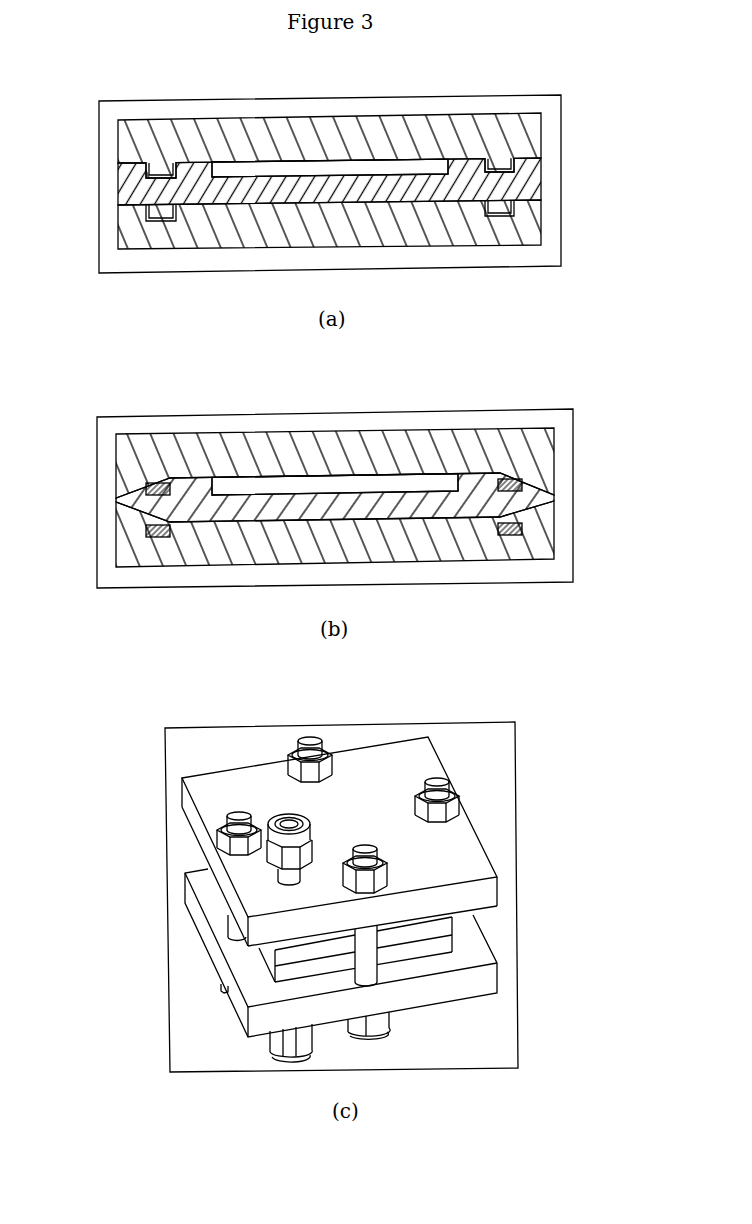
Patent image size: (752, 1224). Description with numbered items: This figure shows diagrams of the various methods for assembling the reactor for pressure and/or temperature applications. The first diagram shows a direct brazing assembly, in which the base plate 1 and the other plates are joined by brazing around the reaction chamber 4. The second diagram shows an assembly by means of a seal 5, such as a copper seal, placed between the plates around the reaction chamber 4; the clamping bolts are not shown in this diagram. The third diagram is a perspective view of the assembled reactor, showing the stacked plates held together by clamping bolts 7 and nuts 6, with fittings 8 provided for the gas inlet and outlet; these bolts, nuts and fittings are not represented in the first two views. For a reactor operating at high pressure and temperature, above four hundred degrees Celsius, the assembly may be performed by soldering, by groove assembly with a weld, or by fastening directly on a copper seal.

The base plate 1 is at (445, 932).
The reaction chamber 4 is at (258, 488).
The seal 5 is at (150, 491).
The nuts 6 is at (551, 668).
The clamping bolts 7 is at (435, 782).
The fittings 8 is at (104, 876).